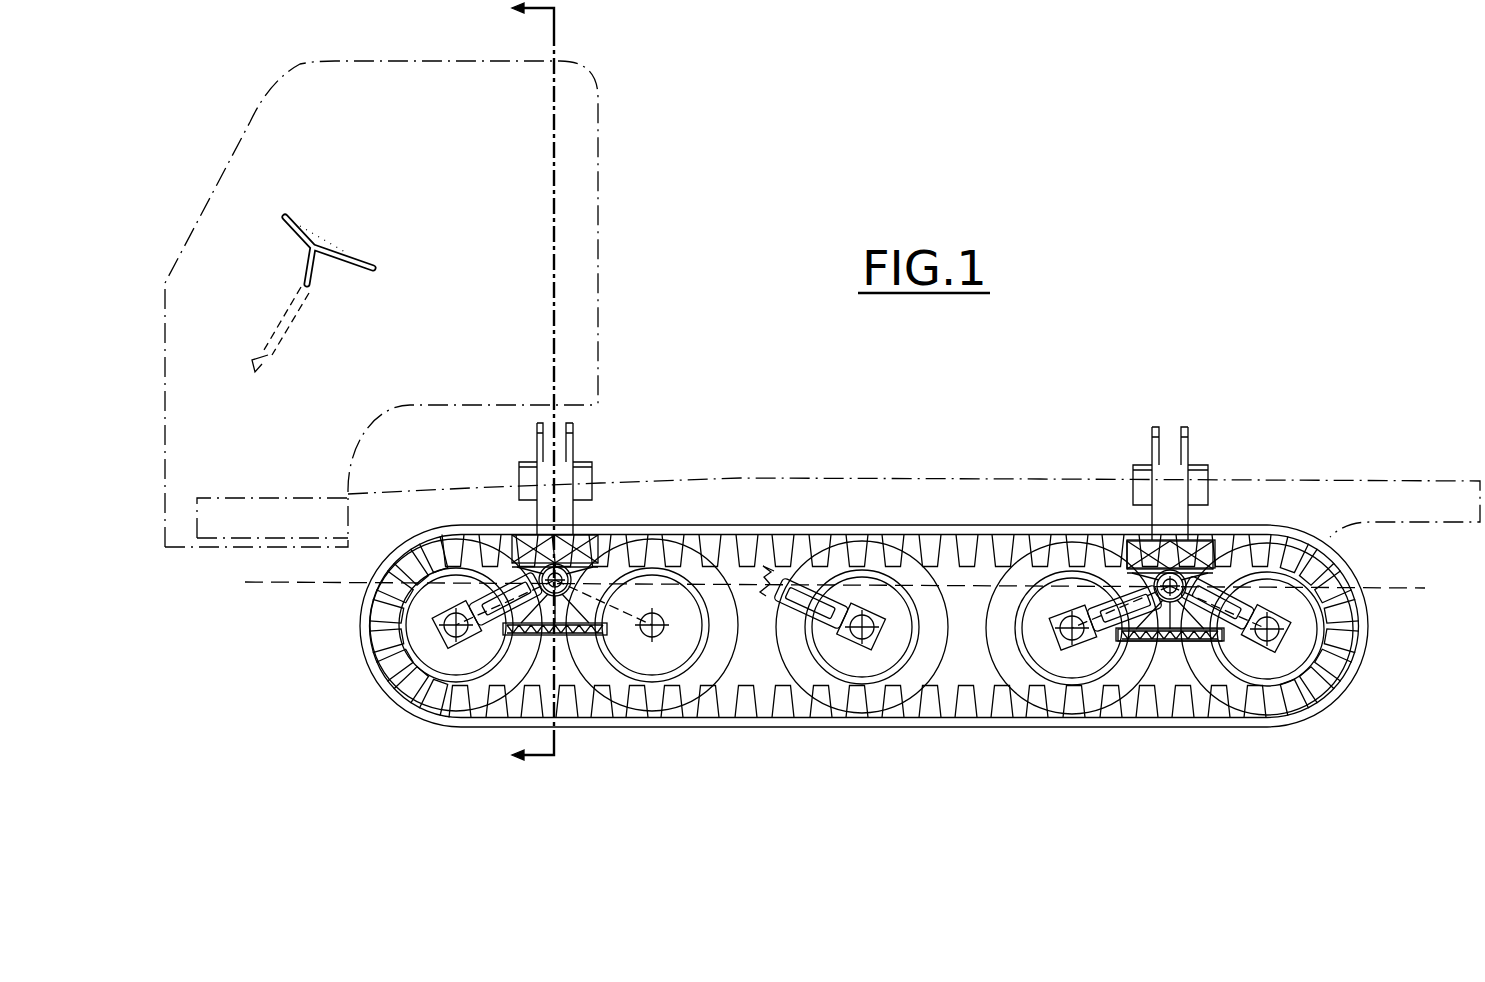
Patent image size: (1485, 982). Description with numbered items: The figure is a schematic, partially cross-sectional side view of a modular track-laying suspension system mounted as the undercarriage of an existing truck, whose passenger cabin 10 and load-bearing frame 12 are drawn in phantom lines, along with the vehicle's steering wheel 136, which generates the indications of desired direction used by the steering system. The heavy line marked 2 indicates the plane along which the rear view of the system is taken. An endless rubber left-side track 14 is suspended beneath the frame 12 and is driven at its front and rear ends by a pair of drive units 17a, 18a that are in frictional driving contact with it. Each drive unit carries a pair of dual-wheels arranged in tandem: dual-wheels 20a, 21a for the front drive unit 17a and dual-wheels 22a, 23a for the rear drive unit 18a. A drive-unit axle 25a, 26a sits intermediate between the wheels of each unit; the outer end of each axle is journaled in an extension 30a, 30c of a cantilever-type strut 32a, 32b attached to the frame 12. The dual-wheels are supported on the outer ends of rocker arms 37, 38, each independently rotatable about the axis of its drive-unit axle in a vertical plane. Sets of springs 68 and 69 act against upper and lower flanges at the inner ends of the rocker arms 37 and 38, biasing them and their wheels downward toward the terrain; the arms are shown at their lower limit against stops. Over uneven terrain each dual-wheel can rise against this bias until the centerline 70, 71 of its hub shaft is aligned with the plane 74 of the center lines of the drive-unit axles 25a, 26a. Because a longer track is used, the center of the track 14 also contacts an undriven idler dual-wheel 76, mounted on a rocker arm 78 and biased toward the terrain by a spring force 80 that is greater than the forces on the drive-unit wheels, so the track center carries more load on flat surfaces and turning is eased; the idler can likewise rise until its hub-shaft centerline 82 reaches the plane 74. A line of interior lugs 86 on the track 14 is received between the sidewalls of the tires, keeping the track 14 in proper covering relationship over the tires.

The passenger cabin 10 is at (285, 97).
The load-bearing frame 12 is at (290, 525).
The steering wheel 136 is at (282, 343).
The plane 2- 2 is at (548, 382).
The left-side track 14 is at (1338, 690).
The interior lugs 86 is at (968, 546).
The plane of the center lines of the drive-unit axles 74 is at (262, 585).
The dual-wheel 20a is at (403, 703).
The dual-wheel 21a is at (690, 700).
The idler dual-wheel 76 is at (797, 660).
The dual-wheel 23a is at (1012, 692).
The dual-wheel 22a is at (1235, 700).
The rocker arm 38 is at (650, 614).
The hub-shaft centerline 82 is at (872, 641).
The rocker arm 37 is at (462, 618).
The hub shaft centerline 70 is at (1285, 636).
The spring force 80 is at (878, 608).
The rocker arm 78 is at (775, 597).
The hub shaft centerline 71 is at (1035, 642).
The strut extension 30a is at (553, 512).
The cantilever-type strut 32a is at (580, 450).
The strut extension 30c is at (1172, 508).
The cantilever-type strut 32b is at (1152, 447).
The drive-unit axle 25a is at (598, 547).
The drive unit 17a is at (598, 738).
The drive-unit axle 26a is at (1130, 540).
The set of springs 68 is at (1172, 540).
The set of springs 69 is at (1138, 641).
The drive unit 18a is at (1170, 746).